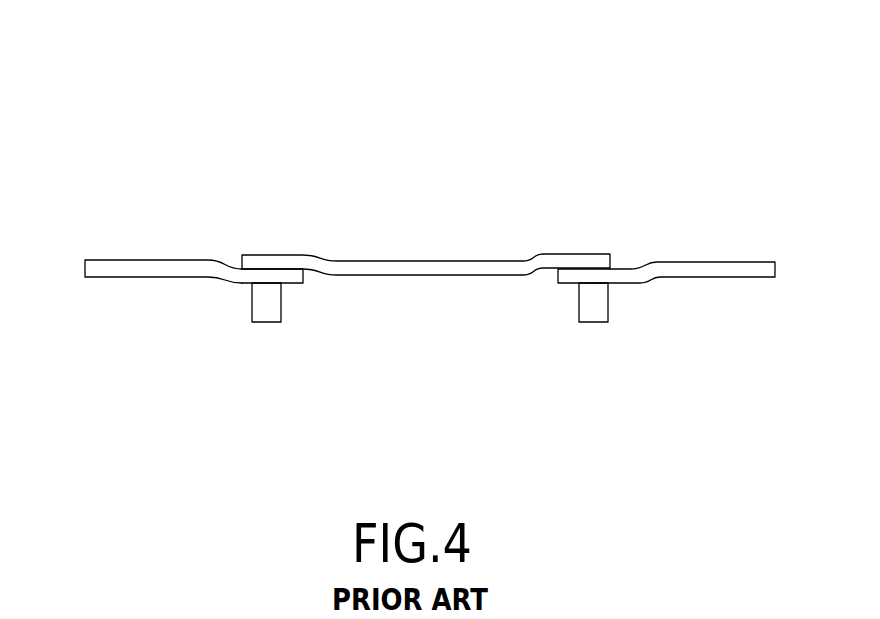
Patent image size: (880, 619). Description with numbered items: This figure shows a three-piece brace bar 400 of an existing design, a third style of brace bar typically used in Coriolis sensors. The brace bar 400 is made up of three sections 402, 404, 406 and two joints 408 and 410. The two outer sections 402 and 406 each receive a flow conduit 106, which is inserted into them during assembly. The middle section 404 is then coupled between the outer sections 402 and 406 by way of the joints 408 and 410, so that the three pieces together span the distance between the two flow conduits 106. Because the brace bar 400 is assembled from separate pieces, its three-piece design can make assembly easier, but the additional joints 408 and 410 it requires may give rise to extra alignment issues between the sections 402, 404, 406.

The three-piece brace bar 400 is at (168, 103).
The section 402 is at (122, 274).
The section 404 is at (430, 261).
The section 406 is at (742, 270).
The joint 408 is at (267, 268).
The joint 410 is at (593, 267).
The flow conduit 106 is at (265, 310).